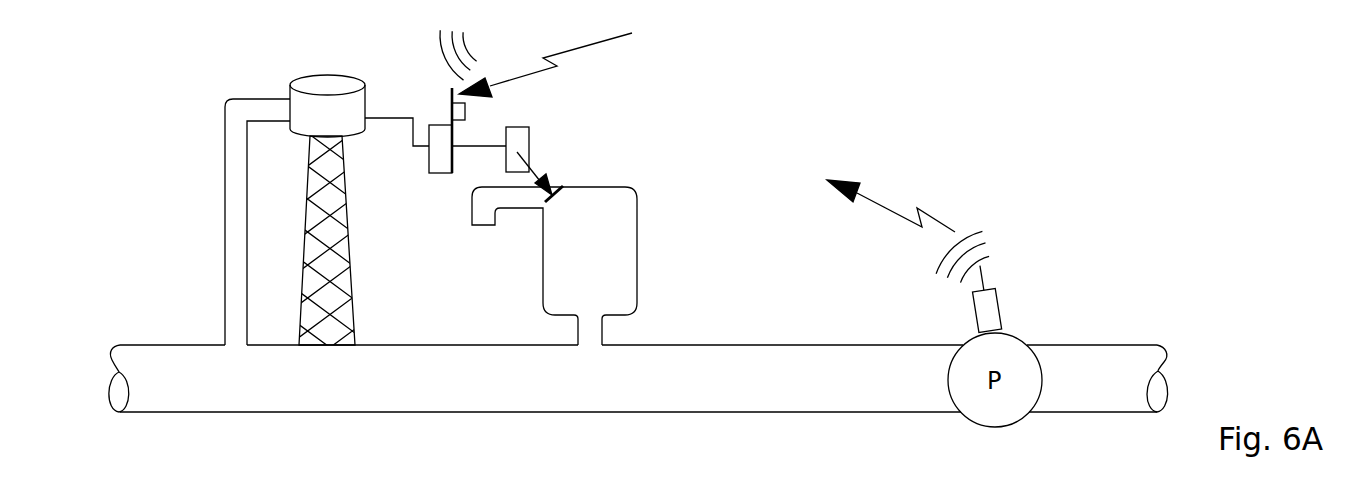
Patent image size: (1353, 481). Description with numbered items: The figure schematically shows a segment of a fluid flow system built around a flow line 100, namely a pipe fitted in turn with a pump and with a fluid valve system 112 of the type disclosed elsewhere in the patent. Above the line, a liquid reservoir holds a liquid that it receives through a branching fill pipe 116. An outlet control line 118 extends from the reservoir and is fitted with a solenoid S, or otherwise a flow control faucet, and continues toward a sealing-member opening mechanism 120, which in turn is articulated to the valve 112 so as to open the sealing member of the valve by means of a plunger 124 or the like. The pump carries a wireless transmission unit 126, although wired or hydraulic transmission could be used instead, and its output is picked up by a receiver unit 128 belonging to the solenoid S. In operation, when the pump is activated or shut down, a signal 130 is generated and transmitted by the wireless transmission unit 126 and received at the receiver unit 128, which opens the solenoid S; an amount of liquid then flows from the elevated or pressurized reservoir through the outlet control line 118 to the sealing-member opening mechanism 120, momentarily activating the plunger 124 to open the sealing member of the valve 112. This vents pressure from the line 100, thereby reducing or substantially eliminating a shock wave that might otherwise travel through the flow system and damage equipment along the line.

The flow line 100 is at (497, 380).
The fluid valve system 112 is at (660, 243).
The branching fill pipe 116 is at (223, 239).
The outlet control line 118 is at (393, 122).
The sealing-member opening mechanism 120 is at (530, 133).
The plunger 124 is at (542, 174).
The wireless transmission unit 126 is at (990, 312).
The receiver unit 128 is at (467, 116).
The signal 130 is at (898, 213).
The solenoid S is at (441, 124).